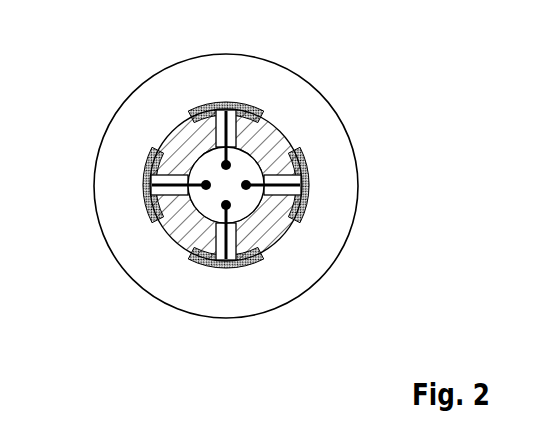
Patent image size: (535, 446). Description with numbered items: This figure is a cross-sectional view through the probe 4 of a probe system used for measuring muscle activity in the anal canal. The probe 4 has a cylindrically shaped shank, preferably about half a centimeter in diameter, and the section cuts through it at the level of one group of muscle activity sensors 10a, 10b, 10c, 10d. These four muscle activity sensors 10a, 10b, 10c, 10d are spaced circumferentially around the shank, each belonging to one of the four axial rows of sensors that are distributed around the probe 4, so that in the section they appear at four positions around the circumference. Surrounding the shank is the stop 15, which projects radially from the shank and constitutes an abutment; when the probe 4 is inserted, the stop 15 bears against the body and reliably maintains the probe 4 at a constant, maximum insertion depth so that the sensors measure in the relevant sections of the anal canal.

The probe 4 is at (343, 100).
The stop 15 is at (348, 130).
The muscle activity sensor 10a is at (153, 207).
The muscle activity sensor 10b is at (206, 260).
The muscle activity sensor 10c is at (305, 205).
The muscle activity sensor 10d is at (205, 103).